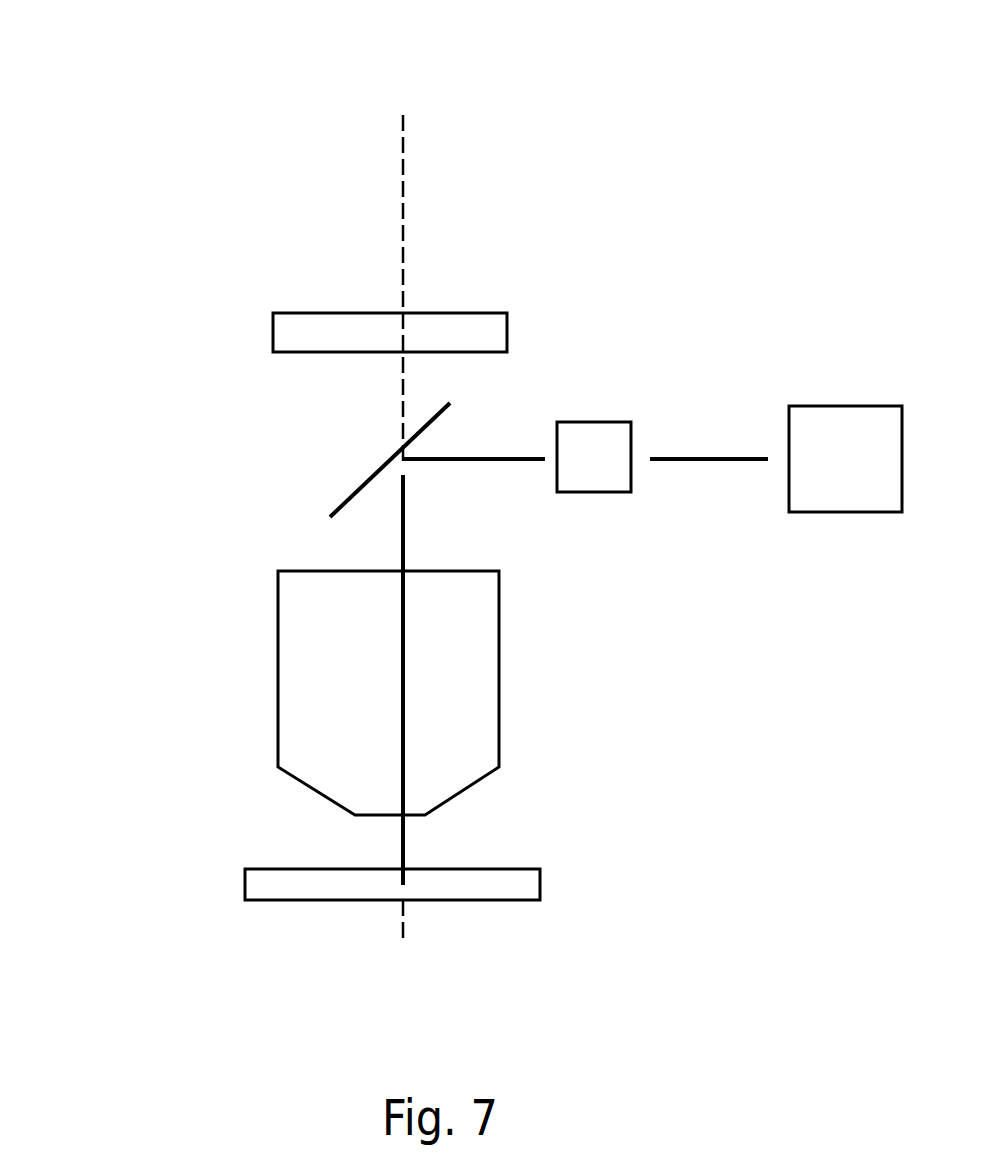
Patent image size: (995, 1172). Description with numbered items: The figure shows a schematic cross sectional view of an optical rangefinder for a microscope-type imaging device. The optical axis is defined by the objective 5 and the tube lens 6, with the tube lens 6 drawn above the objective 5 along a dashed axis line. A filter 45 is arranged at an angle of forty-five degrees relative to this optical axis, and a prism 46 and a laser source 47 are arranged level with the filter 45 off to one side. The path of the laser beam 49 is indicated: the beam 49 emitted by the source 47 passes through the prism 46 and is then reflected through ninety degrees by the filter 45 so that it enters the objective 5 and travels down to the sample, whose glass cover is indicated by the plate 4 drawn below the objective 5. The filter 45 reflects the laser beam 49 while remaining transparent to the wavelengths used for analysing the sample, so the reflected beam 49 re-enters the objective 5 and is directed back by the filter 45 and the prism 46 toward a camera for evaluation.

The substrate / sample 4 is at (540, 888).
The objective 5 is at (586, 764).
The tube lens 6 is at (446, 266).
The filter 45 is at (303, 502).
The prism 46 is at (590, 382).
The laser source 47 is at (818, 376).
The laser beam 49 is at (436, 511).